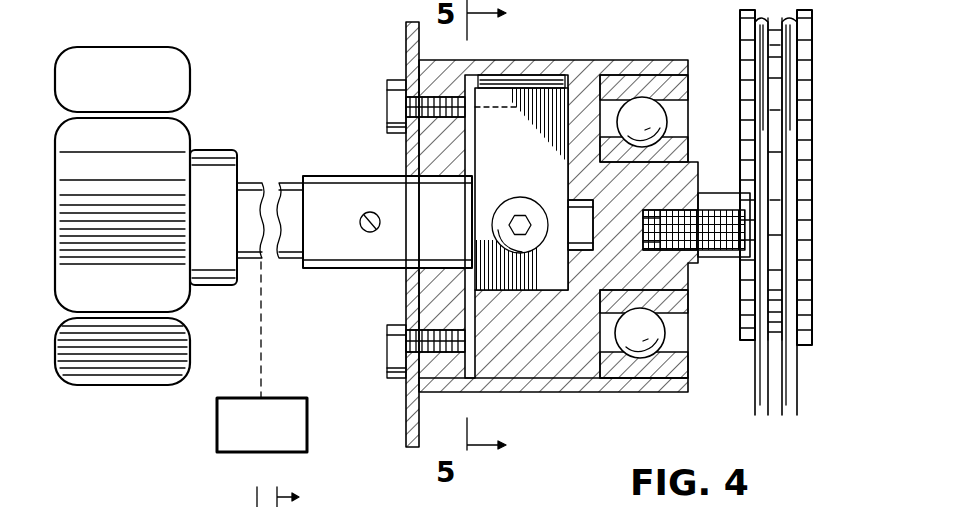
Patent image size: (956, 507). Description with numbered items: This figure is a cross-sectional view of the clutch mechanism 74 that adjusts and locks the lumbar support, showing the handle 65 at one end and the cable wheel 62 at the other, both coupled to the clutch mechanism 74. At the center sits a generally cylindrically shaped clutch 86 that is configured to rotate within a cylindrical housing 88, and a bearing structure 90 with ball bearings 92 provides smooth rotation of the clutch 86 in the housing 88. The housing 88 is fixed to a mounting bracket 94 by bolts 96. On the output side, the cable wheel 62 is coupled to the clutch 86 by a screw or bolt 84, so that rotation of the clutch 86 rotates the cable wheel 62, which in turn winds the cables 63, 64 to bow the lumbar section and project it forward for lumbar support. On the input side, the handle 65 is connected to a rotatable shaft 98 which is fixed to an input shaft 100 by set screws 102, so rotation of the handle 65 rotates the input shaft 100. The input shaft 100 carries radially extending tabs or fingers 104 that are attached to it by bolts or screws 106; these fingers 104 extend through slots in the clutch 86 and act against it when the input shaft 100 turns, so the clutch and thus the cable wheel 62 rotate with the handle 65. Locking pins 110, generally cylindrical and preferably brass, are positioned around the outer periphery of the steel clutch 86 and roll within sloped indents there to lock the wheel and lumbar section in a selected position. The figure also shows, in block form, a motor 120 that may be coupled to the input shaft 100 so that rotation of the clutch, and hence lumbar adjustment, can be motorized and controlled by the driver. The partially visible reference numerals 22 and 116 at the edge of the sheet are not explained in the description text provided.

The handle 65 is at (190, 73).
The rotatable shaft 98 is at (287, 182).
The motor 120 is at (292, 398).
The input shaft 100 is at (387, 242).
The set screws 102 is at (361, 228).
The mounting bracket 94 is at (406, 153).
The clutch 86 is at (548, 372).
The housing 88 is at (640, 392).
The bolts 96 is at (387, 105).
The fingers 104 is at (508, 159).
The locking pins 110 is at (513, 78).
The bolts or screws 106 is at (494, 222).
The bearing structure 90 is at (664, 221).
The ball bearings 92 is at (668, 120).
The screw or bolt 84 is at (724, 208).
The cable wheel 62 is at (812, 128).
The cable 63 is at (757, 400).
The cable 64 is at (800, 403).
The clutch mechanism 74 is at (358, 72).
The frame 22 is at (128, 503).
The section line 116 is at (191, 501).